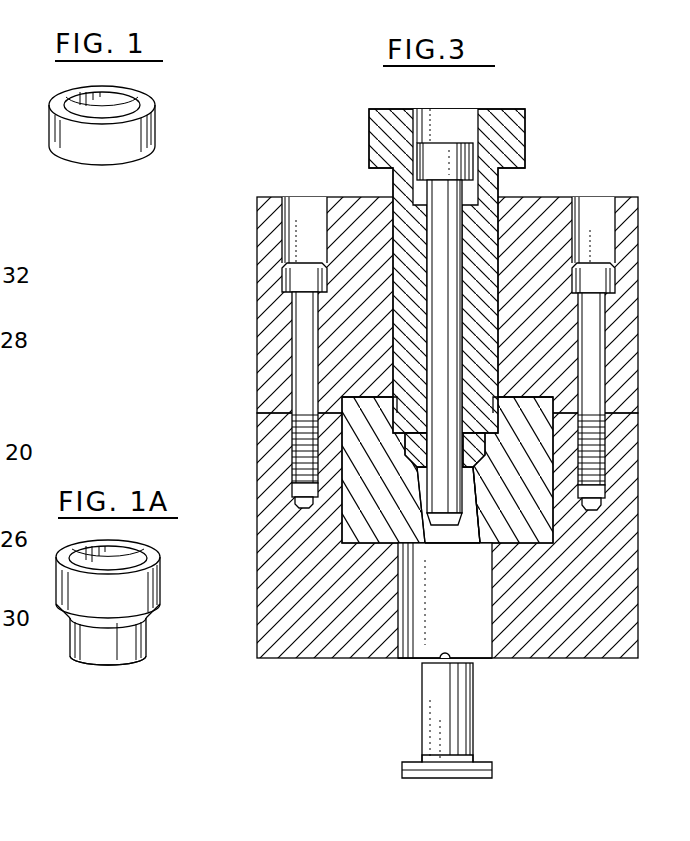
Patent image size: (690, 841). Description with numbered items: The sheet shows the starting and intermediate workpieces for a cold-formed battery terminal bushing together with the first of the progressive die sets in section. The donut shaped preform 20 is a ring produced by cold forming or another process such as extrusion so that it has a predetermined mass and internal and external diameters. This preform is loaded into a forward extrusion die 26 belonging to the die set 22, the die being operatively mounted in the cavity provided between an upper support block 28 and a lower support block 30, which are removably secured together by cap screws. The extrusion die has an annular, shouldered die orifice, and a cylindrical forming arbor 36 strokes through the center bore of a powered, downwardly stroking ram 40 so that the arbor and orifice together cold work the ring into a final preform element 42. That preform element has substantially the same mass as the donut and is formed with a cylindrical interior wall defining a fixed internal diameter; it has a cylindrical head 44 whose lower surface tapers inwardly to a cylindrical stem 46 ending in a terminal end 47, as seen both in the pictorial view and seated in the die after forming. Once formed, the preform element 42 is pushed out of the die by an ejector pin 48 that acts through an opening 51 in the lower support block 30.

In FIG. 1, the donut shaped preform 20 is at (162, 128).
In FIG. 3, the progressive die set 22 is at (306, 186).
In FIG. 3, the forward extrusion die 26 is at (488, 533).
In FIG. 3, the upper support block 28 is at (628, 225).
In FIG. 3, the lower support block 30 is at (628, 600).
In FIG. 3, the cylindrical forming arbor 36 is at (452, 198).
In FIG. 3, the ram 40 is at (517, 135).
In FIG. 1A, the final preform element 42 is at (164, 556).
In FIG. 3, the final preform element 42 is at (396, 451).
In FIG. 1A, the cylindrical head 44 is at (72, 578).
In FIG. 3, the cylindrical head 44 is at (478, 451).
In FIG. 1A, the cylindrical stem 46 is at (148, 636).
In FIG. 3, the cylindrical stem 46 is at (417, 494).
In FIG. 1A, the terminal end 47 is at (88, 660).
In FIG. 3, the terminal end 47 is at (422, 522).
In FIG. 3, the ejector pin 48 is at (463, 728).
In FIG. 3, the opening 51 is at (460, 627).